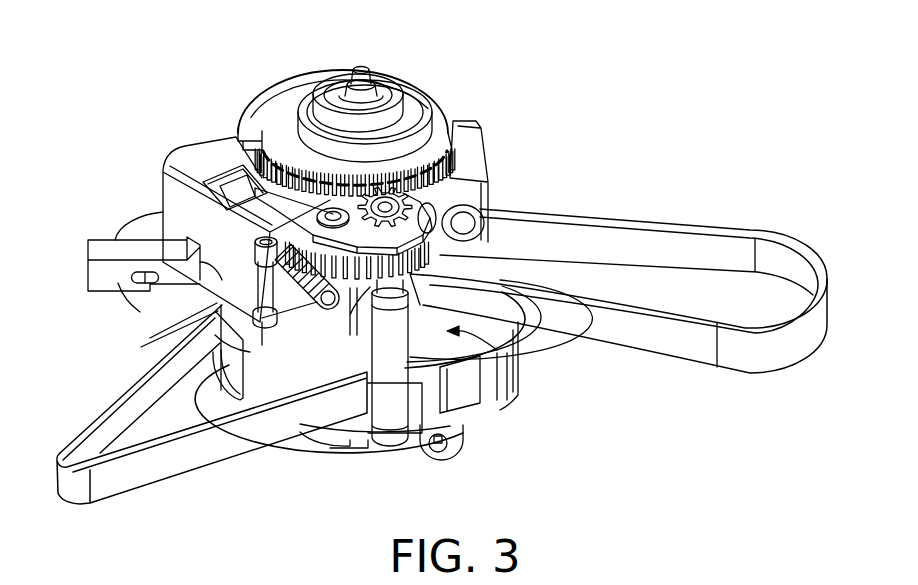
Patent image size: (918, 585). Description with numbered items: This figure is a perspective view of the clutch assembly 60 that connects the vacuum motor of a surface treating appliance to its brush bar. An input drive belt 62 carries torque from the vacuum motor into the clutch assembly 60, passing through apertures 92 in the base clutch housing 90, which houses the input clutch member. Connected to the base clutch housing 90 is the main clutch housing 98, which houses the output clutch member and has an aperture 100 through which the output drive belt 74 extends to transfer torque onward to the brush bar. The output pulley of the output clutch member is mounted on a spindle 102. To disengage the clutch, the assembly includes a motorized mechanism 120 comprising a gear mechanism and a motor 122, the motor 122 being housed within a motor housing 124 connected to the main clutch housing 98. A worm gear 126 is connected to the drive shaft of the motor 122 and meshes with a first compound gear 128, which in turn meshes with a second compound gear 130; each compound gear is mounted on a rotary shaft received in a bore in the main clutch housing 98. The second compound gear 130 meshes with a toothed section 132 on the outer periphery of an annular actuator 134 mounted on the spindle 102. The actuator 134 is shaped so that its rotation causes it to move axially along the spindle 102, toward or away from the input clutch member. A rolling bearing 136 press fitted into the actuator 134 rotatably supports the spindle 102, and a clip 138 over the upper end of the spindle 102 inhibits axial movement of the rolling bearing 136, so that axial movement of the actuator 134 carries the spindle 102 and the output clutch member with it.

The clutch assembly 60 is at (495, 97).
The input drive belt 62 is at (106, 482).
The output drive belt 74 is at (781, 353).
The base clutch housing 90 is at (343, 443).
The apertures 92 is at (233, 373).
The main clutch housing 98 is at (267, 348).
The aperture 100 is at (513, 365).
The spindle 102 is at (364, 69).
The motorized mechanism 120 is at (128, 160).
The motor 122 is at (207, 183).
The motor housing 124 is at (222, 189).
The worm gear 126 is at (352, 305).
The first compound gear 128 is at (350, 303).
The second compound gear 130 is at (427, 272).
The toothed section 132 is at (477, 173).
The annular actuator 134 is at (273, 92).
The rolling bearing 136 is at (388, 100).
The clip 138 is at (338, 88).